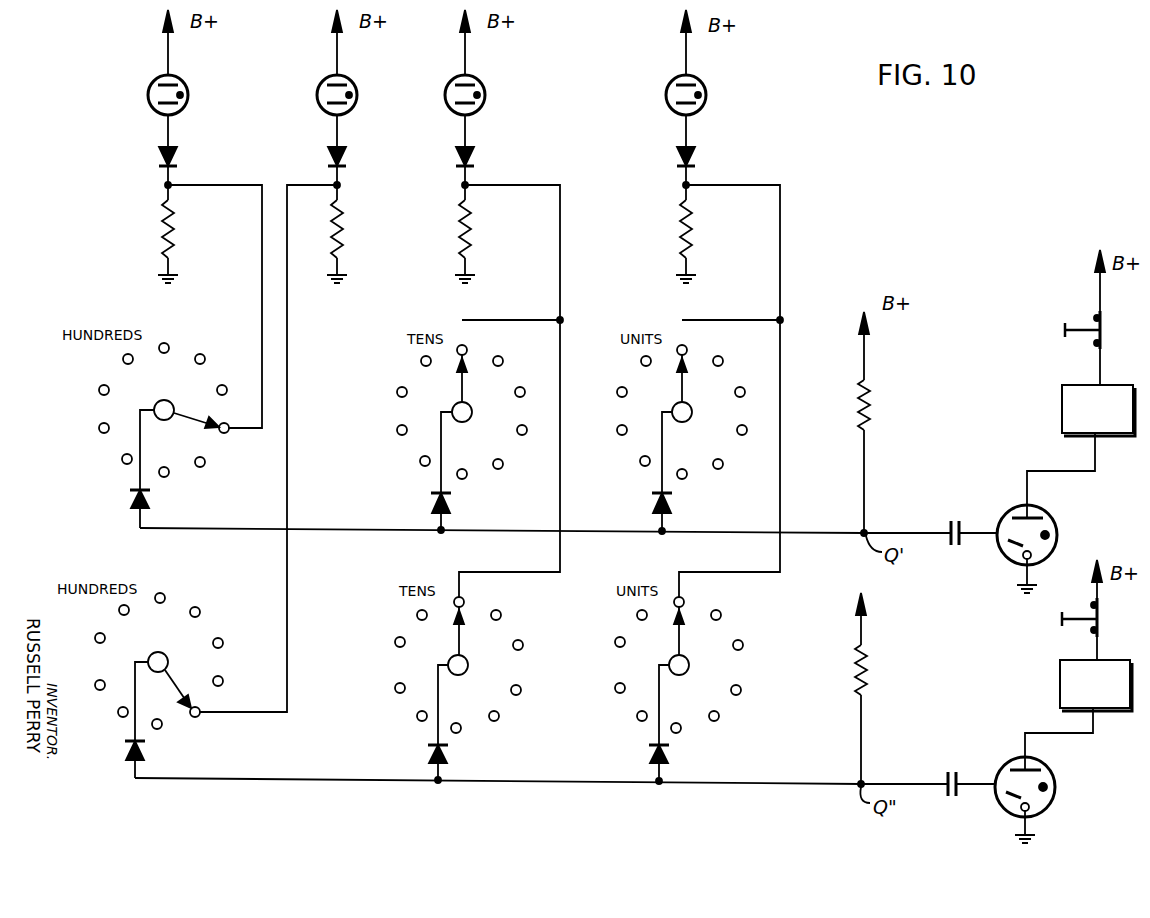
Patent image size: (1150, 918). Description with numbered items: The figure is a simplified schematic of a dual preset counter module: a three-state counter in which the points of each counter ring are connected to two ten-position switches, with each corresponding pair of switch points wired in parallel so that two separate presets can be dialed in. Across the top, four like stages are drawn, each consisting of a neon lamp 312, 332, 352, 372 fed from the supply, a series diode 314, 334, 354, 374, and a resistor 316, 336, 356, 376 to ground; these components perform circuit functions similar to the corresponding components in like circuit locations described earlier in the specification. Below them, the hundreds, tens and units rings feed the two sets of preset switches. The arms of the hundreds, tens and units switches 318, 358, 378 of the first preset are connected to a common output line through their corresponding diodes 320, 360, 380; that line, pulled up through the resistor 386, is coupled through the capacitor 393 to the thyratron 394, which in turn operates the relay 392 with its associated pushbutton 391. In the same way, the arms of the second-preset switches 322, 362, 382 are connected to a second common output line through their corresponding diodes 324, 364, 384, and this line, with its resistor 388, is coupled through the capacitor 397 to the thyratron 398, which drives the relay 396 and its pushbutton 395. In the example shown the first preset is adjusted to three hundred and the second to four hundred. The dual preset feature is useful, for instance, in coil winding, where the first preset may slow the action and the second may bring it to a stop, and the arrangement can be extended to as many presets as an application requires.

The neon lamp 312 is at (188, 103).
The diode 314 is at (178, 156).
The resistor 316 is at (174, 236).
The switch 318 is at (190, 449).
The diode 320 is at (150, 500).
The switch 322 is at (155, 654).
The diode 324 is at (145, 752).
The neon lamp 332 is at (357, 103).
The diode 334 is at (347, 156).
The resistor 336 is at (343, 236).
The neon lamp 352 is at (485, 103).
The diode 354 is at (475, 156).
The resistor 356 is at (471, 236).
The switch 358 is at (495, 449).
The diode 360 is at (451, 503).
The switch 362 is at (455, 654).
The diode 364 is at (448, 755).
The neon lamp 372 is at (706, 108).
The diode 374 is at (696, 158).
The resistor 376 is at (692, 242).
The switch 378 is at (715, 449).
The diode 380 is at (672, 503).
The switch 382 is at (675, 654).
The diode 384 is at (669, 755).
The resistor 386 is at (870, 418).
The resistor 388 is at (867, 680).
The pushbutton 391 is at (1072, 332).
The relay 392 is at (1062, 400).
The capacitor 393 is at (954, 526).
The thyratron 394 is at (1052, 518).
The pushbutton 395 is at (1070, 620).
The relay 396 is at (1060, 684).
The capacitor 397 is at (947, 776).
The thyratron 398 is at (1050, 770).